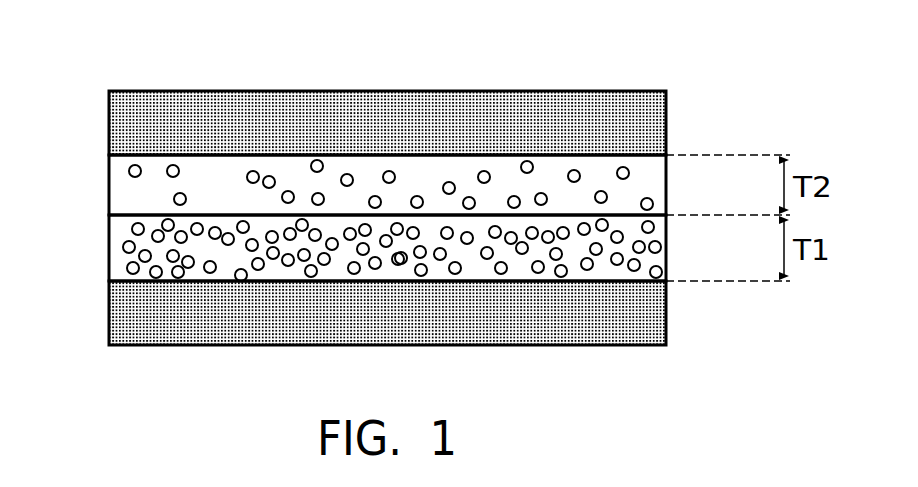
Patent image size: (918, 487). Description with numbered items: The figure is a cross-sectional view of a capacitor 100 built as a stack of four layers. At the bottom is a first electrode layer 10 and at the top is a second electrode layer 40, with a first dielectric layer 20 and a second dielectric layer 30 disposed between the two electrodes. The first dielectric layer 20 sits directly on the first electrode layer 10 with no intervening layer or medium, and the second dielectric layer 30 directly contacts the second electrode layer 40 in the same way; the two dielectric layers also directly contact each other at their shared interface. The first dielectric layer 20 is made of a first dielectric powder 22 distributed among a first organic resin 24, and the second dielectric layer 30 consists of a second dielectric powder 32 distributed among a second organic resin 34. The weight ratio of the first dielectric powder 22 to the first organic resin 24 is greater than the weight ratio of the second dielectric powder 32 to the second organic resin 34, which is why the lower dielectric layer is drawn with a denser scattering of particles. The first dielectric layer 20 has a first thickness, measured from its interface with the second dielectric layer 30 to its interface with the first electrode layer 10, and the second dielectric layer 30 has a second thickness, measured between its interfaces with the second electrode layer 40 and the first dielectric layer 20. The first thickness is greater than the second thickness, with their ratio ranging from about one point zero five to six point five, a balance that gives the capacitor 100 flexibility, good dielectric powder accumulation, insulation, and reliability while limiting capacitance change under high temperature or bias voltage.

The capacitor 100 is at (398, 176).
The first electrode layer 10 is at (666, 313).
The first dielectric layer 20 is at (386, 251).
The first dielectric powder 22 is at (132, 229).
The first organic resin 24 is at (126, 271).
The second dielectric layer 30 is at (386, 187).
The second dielectric powder 32 is at (129, 172).
The second organic resin 34 is at (122, 206).
The second electrode layer 40 is at (666, 125).